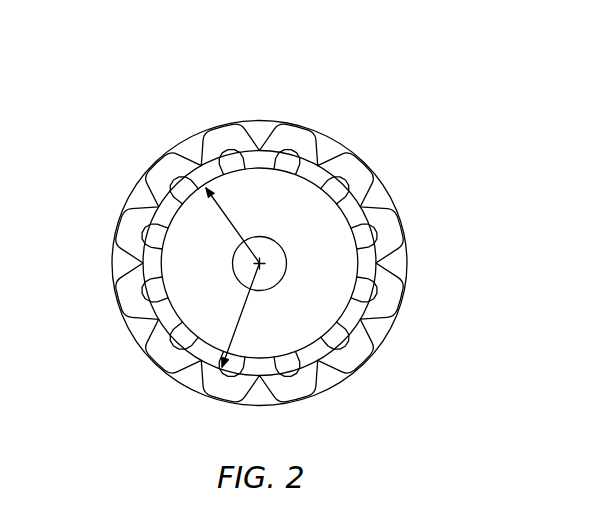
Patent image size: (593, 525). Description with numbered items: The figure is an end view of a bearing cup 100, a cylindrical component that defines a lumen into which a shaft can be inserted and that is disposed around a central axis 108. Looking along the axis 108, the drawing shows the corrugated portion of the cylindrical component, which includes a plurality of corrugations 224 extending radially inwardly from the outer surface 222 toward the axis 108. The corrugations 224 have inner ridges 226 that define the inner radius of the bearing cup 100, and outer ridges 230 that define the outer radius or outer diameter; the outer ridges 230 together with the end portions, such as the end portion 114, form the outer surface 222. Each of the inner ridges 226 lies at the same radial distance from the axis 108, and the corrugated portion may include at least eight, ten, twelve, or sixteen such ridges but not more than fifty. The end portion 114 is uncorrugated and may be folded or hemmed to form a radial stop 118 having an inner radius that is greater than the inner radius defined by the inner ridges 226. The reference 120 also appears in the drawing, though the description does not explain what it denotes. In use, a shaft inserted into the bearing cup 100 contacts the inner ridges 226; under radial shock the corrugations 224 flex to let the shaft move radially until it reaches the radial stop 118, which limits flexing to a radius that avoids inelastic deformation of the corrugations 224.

The bearing cup 100 is at (333, 42).
The axis 108 is at (262, 264).
The end portion 114 is at (0, 10).
The radial stop 118 is at (133, 297).
The intermediate tube wall 120 is at (204, 176).
The outer surface 222 is at (252, 117).
The corrugations 224 is at (353, 187).
The inner ridges 226 is at (200, 177).
The outer ridges 230 is at (113, 230).